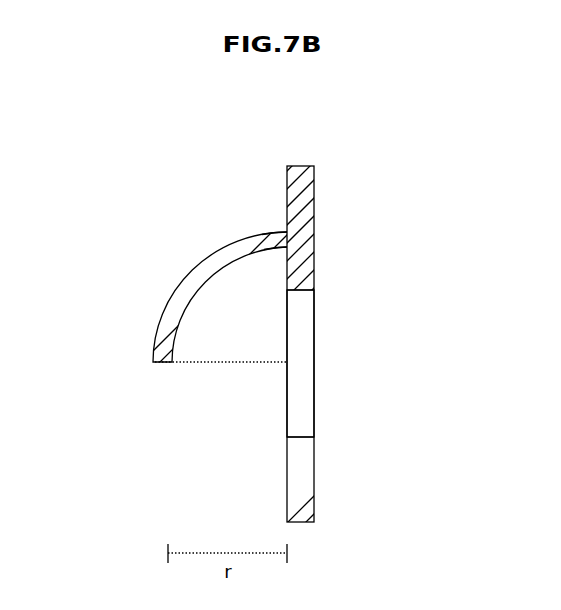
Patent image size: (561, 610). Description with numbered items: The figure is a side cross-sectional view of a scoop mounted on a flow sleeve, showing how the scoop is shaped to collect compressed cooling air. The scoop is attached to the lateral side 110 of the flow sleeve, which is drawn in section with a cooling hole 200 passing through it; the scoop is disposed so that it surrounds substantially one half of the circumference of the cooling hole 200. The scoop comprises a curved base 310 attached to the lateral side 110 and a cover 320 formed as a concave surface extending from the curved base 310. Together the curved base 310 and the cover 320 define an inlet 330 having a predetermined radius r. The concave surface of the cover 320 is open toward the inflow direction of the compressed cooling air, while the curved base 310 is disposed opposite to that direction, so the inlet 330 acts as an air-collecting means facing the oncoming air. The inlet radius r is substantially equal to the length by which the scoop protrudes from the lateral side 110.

The lateral side 110 is at (314, 190).
The cooling holes 200 is at (302, 392).
The curved base 310 is at (285, 230).
The cover 320 is at (156, 364).
The inlet 330 is at (240, 317).